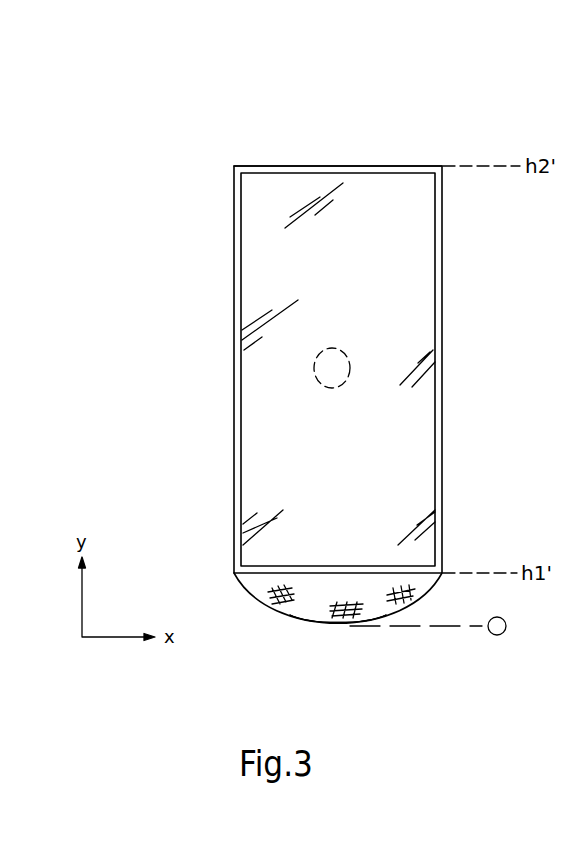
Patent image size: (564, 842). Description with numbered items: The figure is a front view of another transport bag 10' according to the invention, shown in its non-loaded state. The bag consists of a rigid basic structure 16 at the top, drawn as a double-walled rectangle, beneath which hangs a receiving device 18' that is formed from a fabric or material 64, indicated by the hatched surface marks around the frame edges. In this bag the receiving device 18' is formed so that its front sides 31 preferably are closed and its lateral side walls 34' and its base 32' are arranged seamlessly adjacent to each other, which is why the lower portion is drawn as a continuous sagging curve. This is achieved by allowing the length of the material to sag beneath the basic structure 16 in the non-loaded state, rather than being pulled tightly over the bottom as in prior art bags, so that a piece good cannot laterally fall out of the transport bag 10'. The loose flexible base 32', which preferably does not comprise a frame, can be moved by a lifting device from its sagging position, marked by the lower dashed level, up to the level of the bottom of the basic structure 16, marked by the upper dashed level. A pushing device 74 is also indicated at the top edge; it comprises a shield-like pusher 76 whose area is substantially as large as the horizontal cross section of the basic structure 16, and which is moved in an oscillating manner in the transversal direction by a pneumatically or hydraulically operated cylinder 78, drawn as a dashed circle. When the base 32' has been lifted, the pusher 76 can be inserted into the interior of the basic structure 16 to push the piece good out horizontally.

The transport bag 10' is at (322, 381).
The basic structure 16 is at (226, 334).
The receiving device 18' is at (289, 618).
The front sides 31 is at (275, 610).
The base 32' is at (340, 671).
The lateral side walls 34' is at (338, 660).
The material 64 is at (364, 166).
The pushing device 74 is at (271, 158).
The pusher 76 is at (402, 253).
The cylinder 78 is at (325, 348).